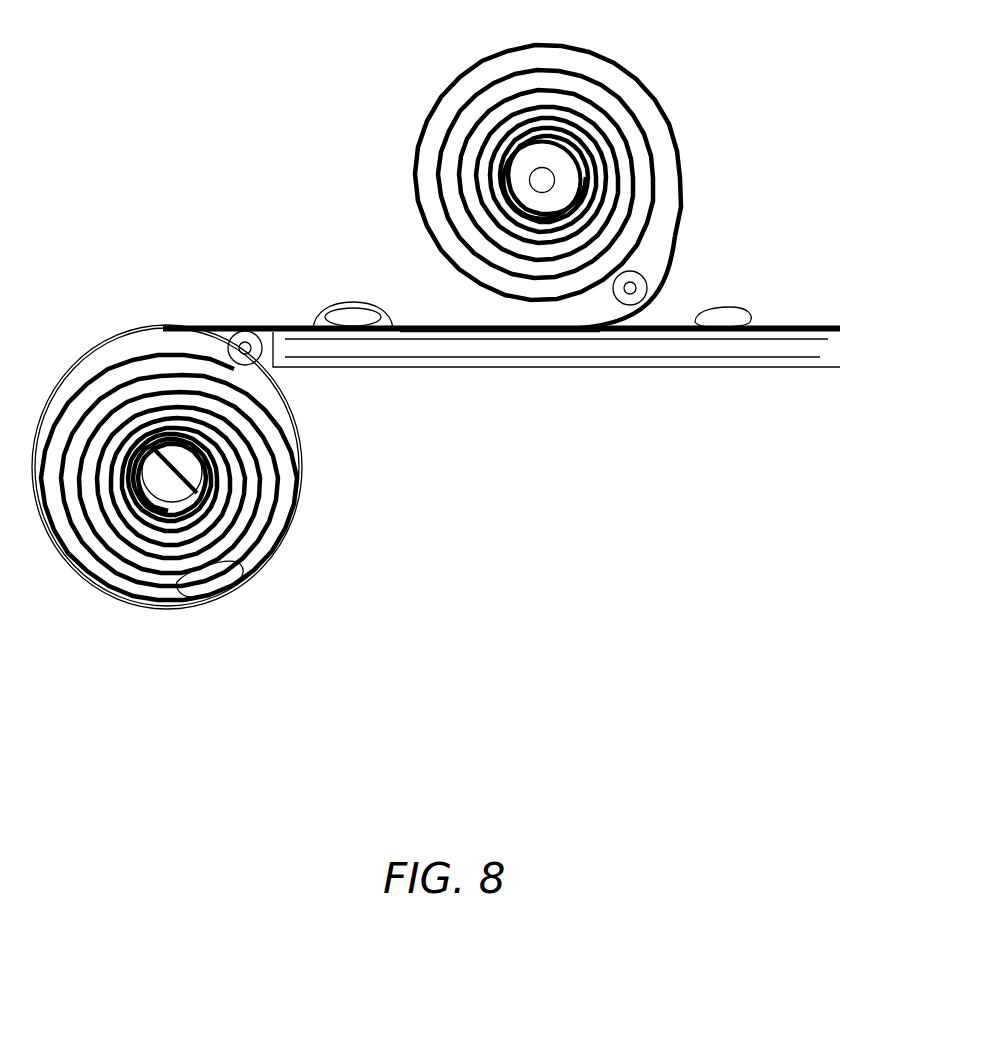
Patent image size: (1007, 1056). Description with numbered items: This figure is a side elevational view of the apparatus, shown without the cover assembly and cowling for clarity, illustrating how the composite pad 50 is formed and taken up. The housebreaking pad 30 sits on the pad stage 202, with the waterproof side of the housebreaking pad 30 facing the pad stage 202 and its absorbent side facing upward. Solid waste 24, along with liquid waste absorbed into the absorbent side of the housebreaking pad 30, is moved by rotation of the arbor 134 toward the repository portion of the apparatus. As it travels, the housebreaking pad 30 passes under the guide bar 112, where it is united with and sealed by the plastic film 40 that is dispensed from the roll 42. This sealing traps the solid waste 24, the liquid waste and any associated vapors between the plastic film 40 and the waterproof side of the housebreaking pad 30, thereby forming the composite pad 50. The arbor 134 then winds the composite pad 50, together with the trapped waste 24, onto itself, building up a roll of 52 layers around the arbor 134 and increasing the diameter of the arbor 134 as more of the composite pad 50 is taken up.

The solid waste 24 is at (345, 308).
The housebreaking pad 30 is at (793, 327).
The plastic film 40 is at (450, 323).
The roll 42 is at (648, 96).
The composite pad 50 is at (590, 333).
The roll of layers 52 is at (122, 342).
The guide bar 112 is at (642, 280).
The arbor 134 is at (162, 482).
The pad stage 202 is at (723, 367).